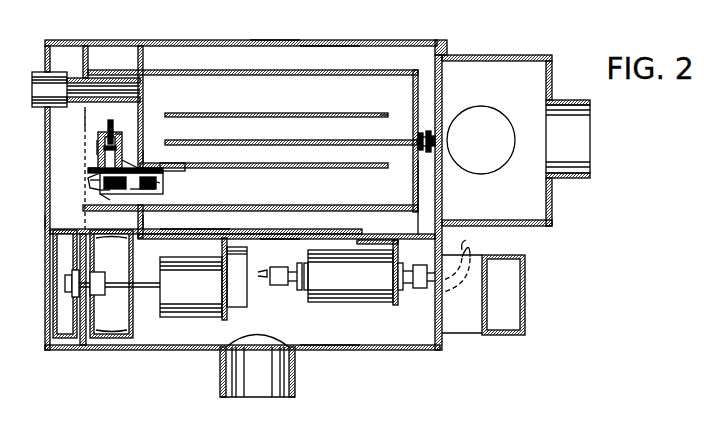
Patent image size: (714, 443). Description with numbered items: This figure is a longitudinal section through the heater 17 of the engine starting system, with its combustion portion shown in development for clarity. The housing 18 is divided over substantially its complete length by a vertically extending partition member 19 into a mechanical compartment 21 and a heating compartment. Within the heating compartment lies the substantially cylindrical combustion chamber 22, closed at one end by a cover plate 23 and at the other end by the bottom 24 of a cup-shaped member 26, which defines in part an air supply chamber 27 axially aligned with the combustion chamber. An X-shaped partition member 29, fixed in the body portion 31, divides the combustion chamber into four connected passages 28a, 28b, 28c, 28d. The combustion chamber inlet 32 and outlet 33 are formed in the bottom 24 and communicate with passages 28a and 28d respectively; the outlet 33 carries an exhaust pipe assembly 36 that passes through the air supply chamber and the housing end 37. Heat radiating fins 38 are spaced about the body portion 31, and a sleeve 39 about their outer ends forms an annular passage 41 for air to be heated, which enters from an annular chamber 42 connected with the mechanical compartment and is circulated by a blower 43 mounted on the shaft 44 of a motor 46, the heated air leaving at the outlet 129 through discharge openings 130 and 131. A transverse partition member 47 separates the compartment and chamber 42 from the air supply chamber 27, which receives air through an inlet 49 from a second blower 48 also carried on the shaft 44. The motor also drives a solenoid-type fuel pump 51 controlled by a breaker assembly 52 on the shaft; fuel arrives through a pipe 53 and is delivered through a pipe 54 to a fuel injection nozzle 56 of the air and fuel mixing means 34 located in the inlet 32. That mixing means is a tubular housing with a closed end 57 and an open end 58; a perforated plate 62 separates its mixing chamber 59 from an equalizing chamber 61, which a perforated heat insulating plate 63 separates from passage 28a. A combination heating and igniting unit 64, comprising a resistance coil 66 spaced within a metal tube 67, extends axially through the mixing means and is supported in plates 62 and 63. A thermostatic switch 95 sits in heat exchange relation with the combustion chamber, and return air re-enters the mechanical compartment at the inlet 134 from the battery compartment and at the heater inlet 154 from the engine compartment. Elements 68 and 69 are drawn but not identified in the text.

The heater 17 is at (285, 42).
The housing 18 is at (335, 42).
The partition member 19 is at (281, 240).
The mechanical compartment 21 is at (330, 331).
The combustion chamber 22 is at (210, 58).
The cover plate 23 is at (428, 197).
The bottom 24 is at (173, 108).
The cup-shaped member 26 is at (113, 70).
The air supply chamber 27 is at (109, 136).
The passage 28a is at (250, 194).
The passage 28b is at (264, 156).
The passage 28c is at (291, 132).
The passage 28d is at (276, 98).
The partition member 29 is at (349, 118).
The body portion 31 is at (376, 75).
The combustion chamber inlet 32 is at (176, 206).
The outlet 33 is at (140, 80).
The air and fuel mixing means 34 is at (91, 163).
The exhaust pipe assembly 36 is at (68, 68).
The end 37 is at (46, 222).
The heat radiating fins 38 is at (387, 62).
The sleeve 39 is at (172, 42).
The annular passage 41 is at (242, 223).
The annular chamber 42 is at (106, 276).
The blower 43 is at (118, 317).
The shaft 44 is at (126, 282).
The motor 46 is at (197, 313).
The partition member 47 is at (85, 128).
The blower 48 is at (60, 340).
The inlet 49 is at (47, 288).
The fuel pump 51 is at (363, 302).
The breaker assembly 52 is at (238, 308).
The pipe 53 is at (472, 246).
The pipe 54 is at (265, 278).
The fuel injection nozzle 56 is at (118, 134).
The closed end 57 is at (107, 188).
The open end 58 is at (165, 175).
The mixing chamber 59 is at (93, 181).
The equalizing chamber 61 is at (144, 204).
The perforated plate 62 is at (143, 153).
The perforated heat insulating plate 63 is at (160, 184).
The combination heating and igniting unit 64 is at (166, 170).
The resistance coil 66 is at (155, 186).
The metal tube 67 is at (107, 200).
The wall 68 is at (97, 148).
The valve member 69 is at (90, 169).
The thermostatic switch 95 is at (436, 125).
The outlet 129 is at (500, 55).
The discharge opening 130 is at (486, 112).
The discharge opening 131 is at (584, 128).
The inlet 134 is at (296, 380).
The heater inlet 154 is at (463, 332).